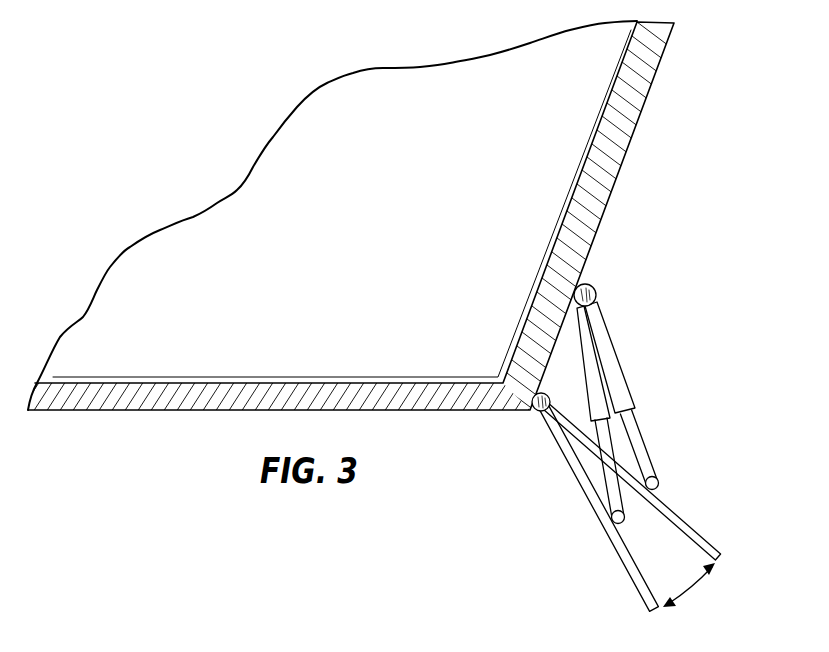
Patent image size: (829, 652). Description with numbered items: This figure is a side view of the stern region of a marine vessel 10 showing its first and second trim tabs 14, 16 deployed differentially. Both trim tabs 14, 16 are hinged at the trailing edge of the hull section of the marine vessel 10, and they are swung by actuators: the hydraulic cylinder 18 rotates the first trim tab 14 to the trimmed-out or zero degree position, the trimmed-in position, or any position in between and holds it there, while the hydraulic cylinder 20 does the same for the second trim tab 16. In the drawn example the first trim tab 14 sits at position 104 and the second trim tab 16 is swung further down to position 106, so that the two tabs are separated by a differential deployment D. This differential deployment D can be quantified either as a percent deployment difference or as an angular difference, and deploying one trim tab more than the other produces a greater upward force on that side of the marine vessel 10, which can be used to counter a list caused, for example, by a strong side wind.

The marine vessel 10 is at (262, 134).
The first trim tab 14 is at (707, 537).
The second trim tab 16 is at (625, 567).
The hydraulic cylinder 18 is at (616, 352).
The hydraulic cylinder 20 is at (584, 367).
The position 104 is at (677, 501).
The position 106 is at (584, 514).
The differential deployment D is at (698, 588).